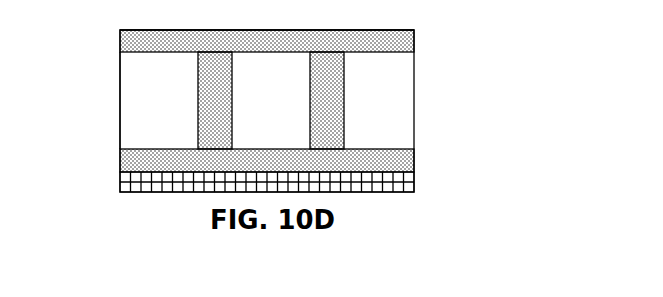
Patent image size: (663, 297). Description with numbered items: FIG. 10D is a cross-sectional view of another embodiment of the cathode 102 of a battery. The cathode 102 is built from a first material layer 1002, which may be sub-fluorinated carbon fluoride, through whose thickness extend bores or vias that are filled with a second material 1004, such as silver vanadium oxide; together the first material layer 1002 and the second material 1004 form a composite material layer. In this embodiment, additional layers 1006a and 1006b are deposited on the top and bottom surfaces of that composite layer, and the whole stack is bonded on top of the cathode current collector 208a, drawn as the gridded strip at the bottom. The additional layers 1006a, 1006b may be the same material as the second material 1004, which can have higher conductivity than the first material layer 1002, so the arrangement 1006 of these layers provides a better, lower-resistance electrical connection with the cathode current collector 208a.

The cathode 102 is at (102, 52).
The first material layer 1002 is at (415, 105).
The second material 1004 is at (344, 92).
The coating 1006 is at (109, 111).
The additional layer 1006a is at (415, 48).
The additional layer 1006b is at (415, 156).
The cathode current collector 208a is at (415, 184).